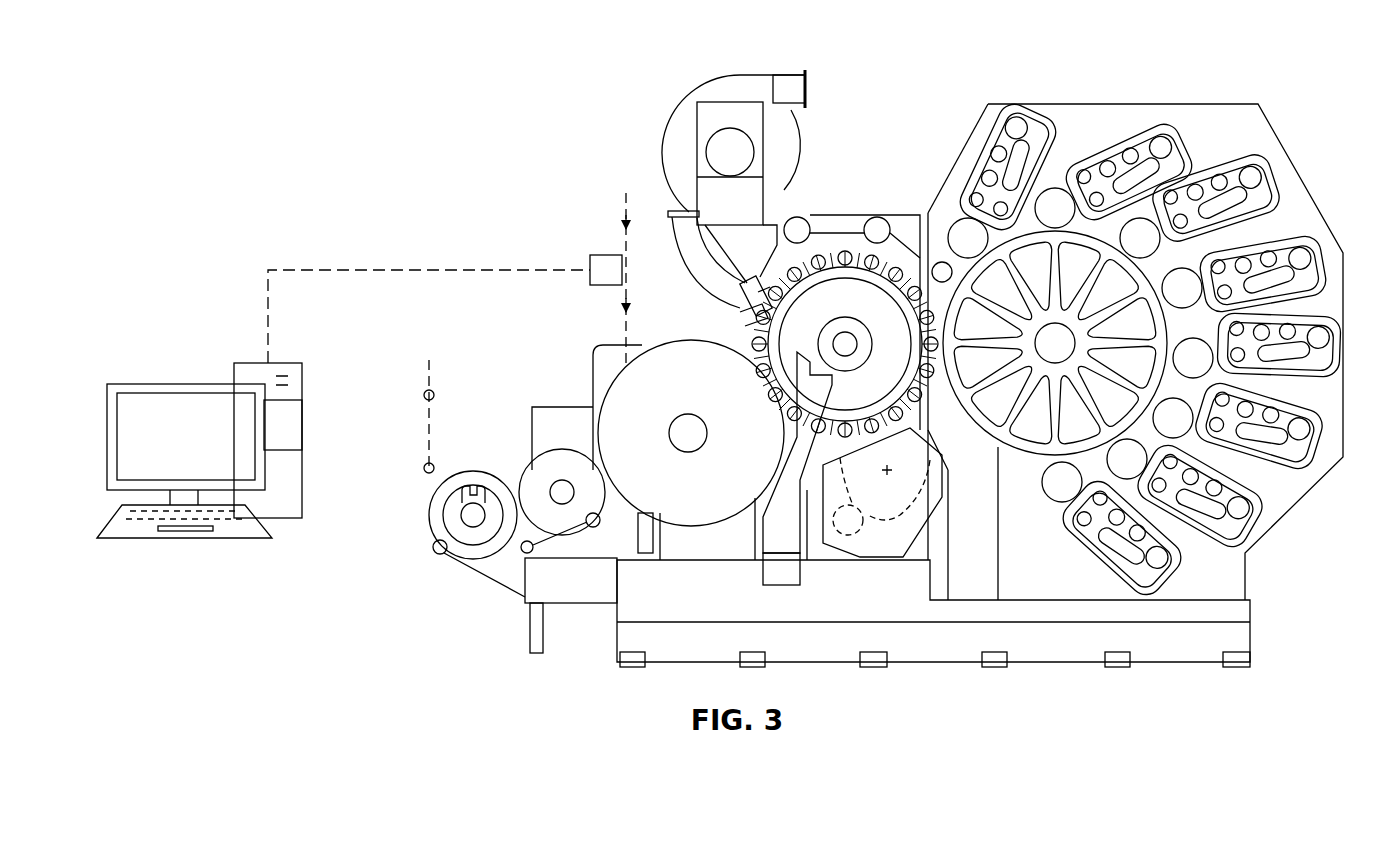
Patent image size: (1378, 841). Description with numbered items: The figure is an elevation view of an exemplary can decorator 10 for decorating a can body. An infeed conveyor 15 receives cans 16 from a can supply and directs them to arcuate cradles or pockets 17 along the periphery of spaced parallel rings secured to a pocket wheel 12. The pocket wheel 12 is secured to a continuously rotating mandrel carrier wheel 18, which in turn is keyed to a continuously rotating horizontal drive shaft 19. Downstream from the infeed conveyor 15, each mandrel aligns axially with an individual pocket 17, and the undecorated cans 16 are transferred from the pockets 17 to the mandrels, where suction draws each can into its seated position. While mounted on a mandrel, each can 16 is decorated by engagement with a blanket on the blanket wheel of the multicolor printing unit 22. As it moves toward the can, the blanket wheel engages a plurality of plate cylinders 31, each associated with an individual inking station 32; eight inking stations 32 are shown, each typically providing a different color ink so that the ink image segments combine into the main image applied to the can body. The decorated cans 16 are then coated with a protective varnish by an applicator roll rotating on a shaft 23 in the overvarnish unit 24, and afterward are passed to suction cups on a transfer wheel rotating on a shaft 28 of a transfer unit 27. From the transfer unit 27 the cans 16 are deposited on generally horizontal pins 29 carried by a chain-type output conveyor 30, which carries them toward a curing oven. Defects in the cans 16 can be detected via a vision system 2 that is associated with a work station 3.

The vision system 2 is at (590, 281).
The work station 3 is at (122, 366).
The can decorator 10 is at (975, 106).
The pocket wheel 12 is at (708, 331).
The infeed conveyor 15 is at (669, 208).
The can 16 is at (742, 343).
The pocket 17 is at (885, 258).
The mandrel carrier wheel 18 is at (790, 264).
The drive shaft 19 is at (845, 350).
The multicolor printing unit 22 is at (1252, 100).
The shaft 23 is at (891, 480).
The overvarnish unit 24 is at (847, 574).
The transfer unit 27 is at (690, 493).
The shaft 28 is at (685, 439).
The pins 29 is at (593, 536).
The output conveyor 30 is at (616, 232).
The plate cylinder 31 is at (1054, 186).
The inking station 32 is at (1304, 238).